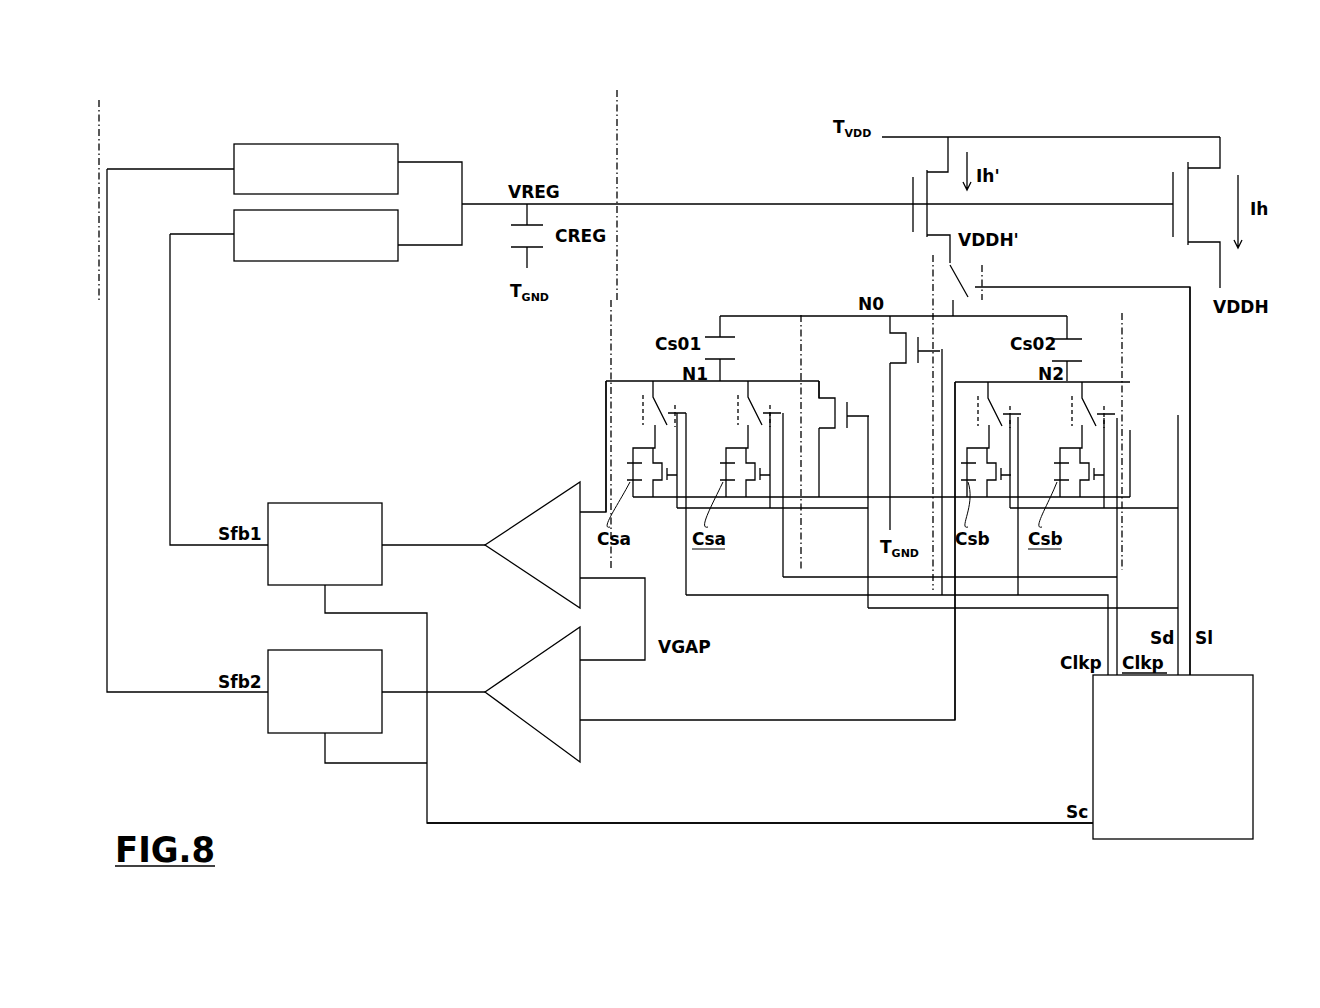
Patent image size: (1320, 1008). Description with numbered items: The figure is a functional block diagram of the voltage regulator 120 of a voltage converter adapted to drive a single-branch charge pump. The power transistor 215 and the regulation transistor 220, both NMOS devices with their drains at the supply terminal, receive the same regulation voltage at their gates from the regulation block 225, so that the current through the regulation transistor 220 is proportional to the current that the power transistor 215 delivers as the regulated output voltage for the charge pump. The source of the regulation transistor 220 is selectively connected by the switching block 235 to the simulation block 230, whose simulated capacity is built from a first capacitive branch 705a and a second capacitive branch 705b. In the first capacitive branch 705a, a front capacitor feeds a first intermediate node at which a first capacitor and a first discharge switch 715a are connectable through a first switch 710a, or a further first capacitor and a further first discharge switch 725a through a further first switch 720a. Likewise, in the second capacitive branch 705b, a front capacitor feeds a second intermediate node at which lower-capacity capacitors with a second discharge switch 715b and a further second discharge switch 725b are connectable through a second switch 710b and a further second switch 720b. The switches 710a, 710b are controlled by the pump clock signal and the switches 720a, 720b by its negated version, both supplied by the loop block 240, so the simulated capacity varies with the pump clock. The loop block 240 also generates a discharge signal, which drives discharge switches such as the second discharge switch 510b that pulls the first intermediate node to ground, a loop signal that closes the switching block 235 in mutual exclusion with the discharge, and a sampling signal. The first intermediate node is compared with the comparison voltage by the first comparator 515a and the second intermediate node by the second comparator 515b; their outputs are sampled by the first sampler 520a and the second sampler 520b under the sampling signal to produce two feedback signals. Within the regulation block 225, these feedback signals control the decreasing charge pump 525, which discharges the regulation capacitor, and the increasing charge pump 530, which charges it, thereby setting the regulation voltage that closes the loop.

The increasing charge pump 530 is at (234, 146).
The decreasing charge pump 525 is at (234, 226).
The regulation block 225 is at (617, 168).
The regulation transistor 220 is at (911, 197).
The power transistor 215 is at (1171, 197).
The switching block 235 is at (932, 290).
The first capacitive branch 705a is at (606, 418).
The second capacitive branch 705b is at (1110, 313).
The voltage regulator 120 is at (1257, 410).
The first switch 710a is at (643, 400).
The further first switch 720a is at (763, 400).
The second switch 710b is at (985, 400).
The further second switch 720b is at (1097, 400).
The second discharge switch 510b is at (833, 400).
The first discharge switch 715a is at (660, 483).
The further first discharge switch 725a is at (753, 483).
The second discharge switch 715b is at (995, 483).
The further second discharge switch 725b is at (1088, 483).
The first sampler 520a is at (302, 503).
The second sampler 520b is at (268, 652).
The first comparator 515a is at (548, 490).
The second comparator 515b is at (510, 668).
The loop block 240 is at (1093, 740).
The simulation block 230 is at (392, 813).